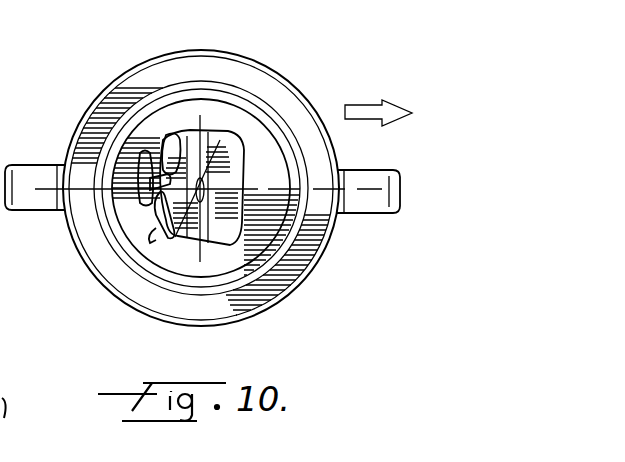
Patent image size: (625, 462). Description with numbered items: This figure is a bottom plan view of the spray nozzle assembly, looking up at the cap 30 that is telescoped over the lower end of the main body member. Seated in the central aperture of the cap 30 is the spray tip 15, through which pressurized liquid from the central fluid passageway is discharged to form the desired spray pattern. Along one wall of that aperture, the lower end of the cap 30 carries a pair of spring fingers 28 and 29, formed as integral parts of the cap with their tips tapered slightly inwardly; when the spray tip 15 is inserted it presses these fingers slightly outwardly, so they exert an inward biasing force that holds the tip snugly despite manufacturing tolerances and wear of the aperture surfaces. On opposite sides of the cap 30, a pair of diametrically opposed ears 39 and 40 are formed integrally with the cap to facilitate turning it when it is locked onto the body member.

The spray tip 15 is at (240, 142).
The spring finger 28 is at (177, 134).
The spring finger 29 is at (158, 227).
The cap 30 is at (150, 59).
The ear 39 is at (368, 210).
The ear 40 is at (30, 167).